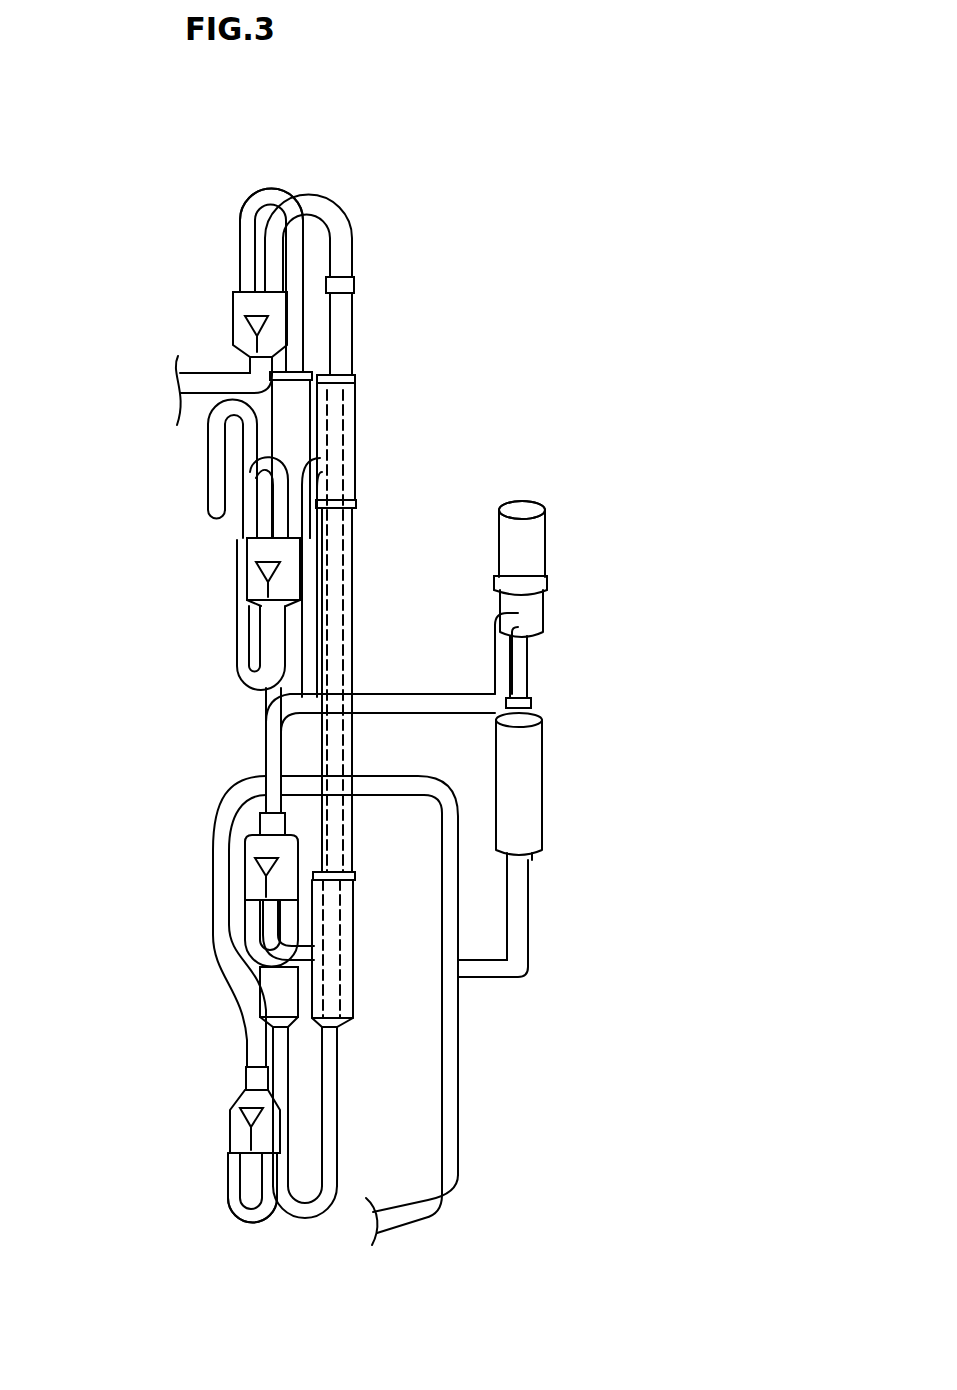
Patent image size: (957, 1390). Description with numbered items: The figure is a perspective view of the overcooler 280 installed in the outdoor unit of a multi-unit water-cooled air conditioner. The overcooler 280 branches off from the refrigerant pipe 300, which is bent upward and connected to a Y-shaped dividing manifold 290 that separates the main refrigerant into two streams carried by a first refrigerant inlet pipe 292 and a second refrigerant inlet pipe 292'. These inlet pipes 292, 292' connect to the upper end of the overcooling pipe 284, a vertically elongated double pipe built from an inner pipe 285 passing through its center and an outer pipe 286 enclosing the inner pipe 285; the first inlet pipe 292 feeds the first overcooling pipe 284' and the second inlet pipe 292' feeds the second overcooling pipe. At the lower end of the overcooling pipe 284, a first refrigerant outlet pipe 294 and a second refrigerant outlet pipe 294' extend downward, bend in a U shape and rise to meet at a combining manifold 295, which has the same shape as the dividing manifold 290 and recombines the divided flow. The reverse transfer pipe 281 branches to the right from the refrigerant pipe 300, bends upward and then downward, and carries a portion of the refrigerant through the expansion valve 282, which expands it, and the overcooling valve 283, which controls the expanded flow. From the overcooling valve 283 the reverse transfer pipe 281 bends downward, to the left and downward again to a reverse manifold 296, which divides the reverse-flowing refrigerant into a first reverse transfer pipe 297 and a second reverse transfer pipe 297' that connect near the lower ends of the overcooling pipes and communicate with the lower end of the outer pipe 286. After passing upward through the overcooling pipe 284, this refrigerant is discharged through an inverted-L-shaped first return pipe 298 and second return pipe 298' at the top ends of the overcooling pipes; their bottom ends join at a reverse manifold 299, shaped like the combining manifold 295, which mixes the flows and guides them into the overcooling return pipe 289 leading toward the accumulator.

The overcooler 280 is at (642, 499).
The reverse transfer pipe 281 is at (522, 905).
The expansion valve 282 is at (527, 780).
The overcooling valve 283 is at (547, 580).
The overcooling pipe 284 is at (435, 434).
The first overcooling pipe 284' is at (421, 441).
The inner pipe 285 is at (345, 570).
The outer pipe 286 is at (347, 540).
The overcooling return pipe 289 is at (208, 458).
The dividing manifold 290 is at (233, 315).
The first refrigerant inlet pipe 292 is at (315, 238).
The second refrigerant inlet pipe 292' is at (271, 235).
The first refrigerant outlet pipe 294 is at (305, 1261).
The second refrigerant outlet pipe 294' is at (251, 1244).
The combining manifold 295 is at (232, 1135).
The reverse manifold 296 is at (258, 862).
The first reverse transfer pipe 297 is at (195, 1076).
The second reverse transfer pipe 297' is at (198, 941).
The first return pipe 298 is at (180, 569).
The second return pipe 298' is at (194, 577).
The reverse manifold 299 is at (262, 558).
The refrigerant pipe 300 is at (197, 405).